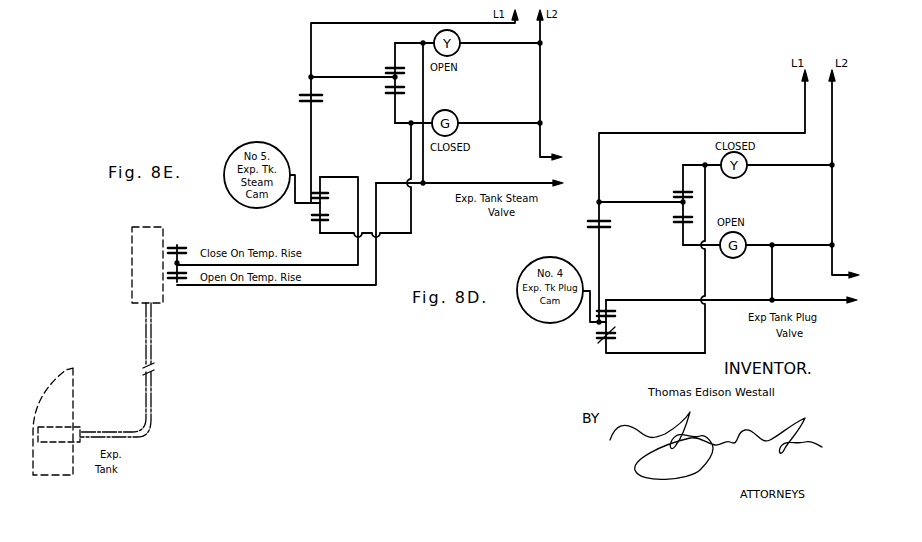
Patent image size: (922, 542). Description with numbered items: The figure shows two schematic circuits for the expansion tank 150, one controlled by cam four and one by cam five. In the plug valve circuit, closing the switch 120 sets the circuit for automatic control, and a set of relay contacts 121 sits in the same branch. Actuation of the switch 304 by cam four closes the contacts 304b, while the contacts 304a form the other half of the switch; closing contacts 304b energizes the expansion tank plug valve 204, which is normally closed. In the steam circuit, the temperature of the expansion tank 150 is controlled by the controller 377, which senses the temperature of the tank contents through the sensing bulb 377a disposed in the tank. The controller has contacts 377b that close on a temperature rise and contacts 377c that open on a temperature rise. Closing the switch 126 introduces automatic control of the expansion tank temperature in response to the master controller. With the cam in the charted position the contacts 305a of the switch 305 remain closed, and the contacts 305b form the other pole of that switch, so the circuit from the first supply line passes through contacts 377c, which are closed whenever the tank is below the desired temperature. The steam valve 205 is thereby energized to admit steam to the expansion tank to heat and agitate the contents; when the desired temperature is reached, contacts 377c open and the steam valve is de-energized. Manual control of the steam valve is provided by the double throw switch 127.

In FIG. 8E, the switch 126 is at (300, 101).
In FIG. 8E, the double throw switch 127 is at (406, 80).
In FIG. 8E, the steam valve 205 is at (555, 166).
In FIG. 8E, the switch 305 is at (294, 216).
In FIG. 8E, the contacts 305a is at (326, 192).
In FIG. 8E, the contacts 305b is at (316, 207).
In FIG. 8E, the controller 377 is at (148, 265).
In FIG. 8E, the sensing bulb 377a is at (73, 421).
In FIG. 8E, the contacts 377b is at (177, 246).
In FIG. 8E, the contacts 377c is at (177, 282).
In FIG. 8E, the expansion tank 150 is at (78, 372).
In FIG. 8D, the switch 120 is at (611, 227).
In FIG. 8D, the relay contacts 121 is at (694, 205).
In FIG. 8D, the expansion tank plug valve 204 is at (847, 284).
In FIG. 8D, the switch 304 is at (630, 329).
In FIG. 8D, the contacts 304a is at (595, 328).
In FIG. 8D, the contacts 304b is at (617, 314).